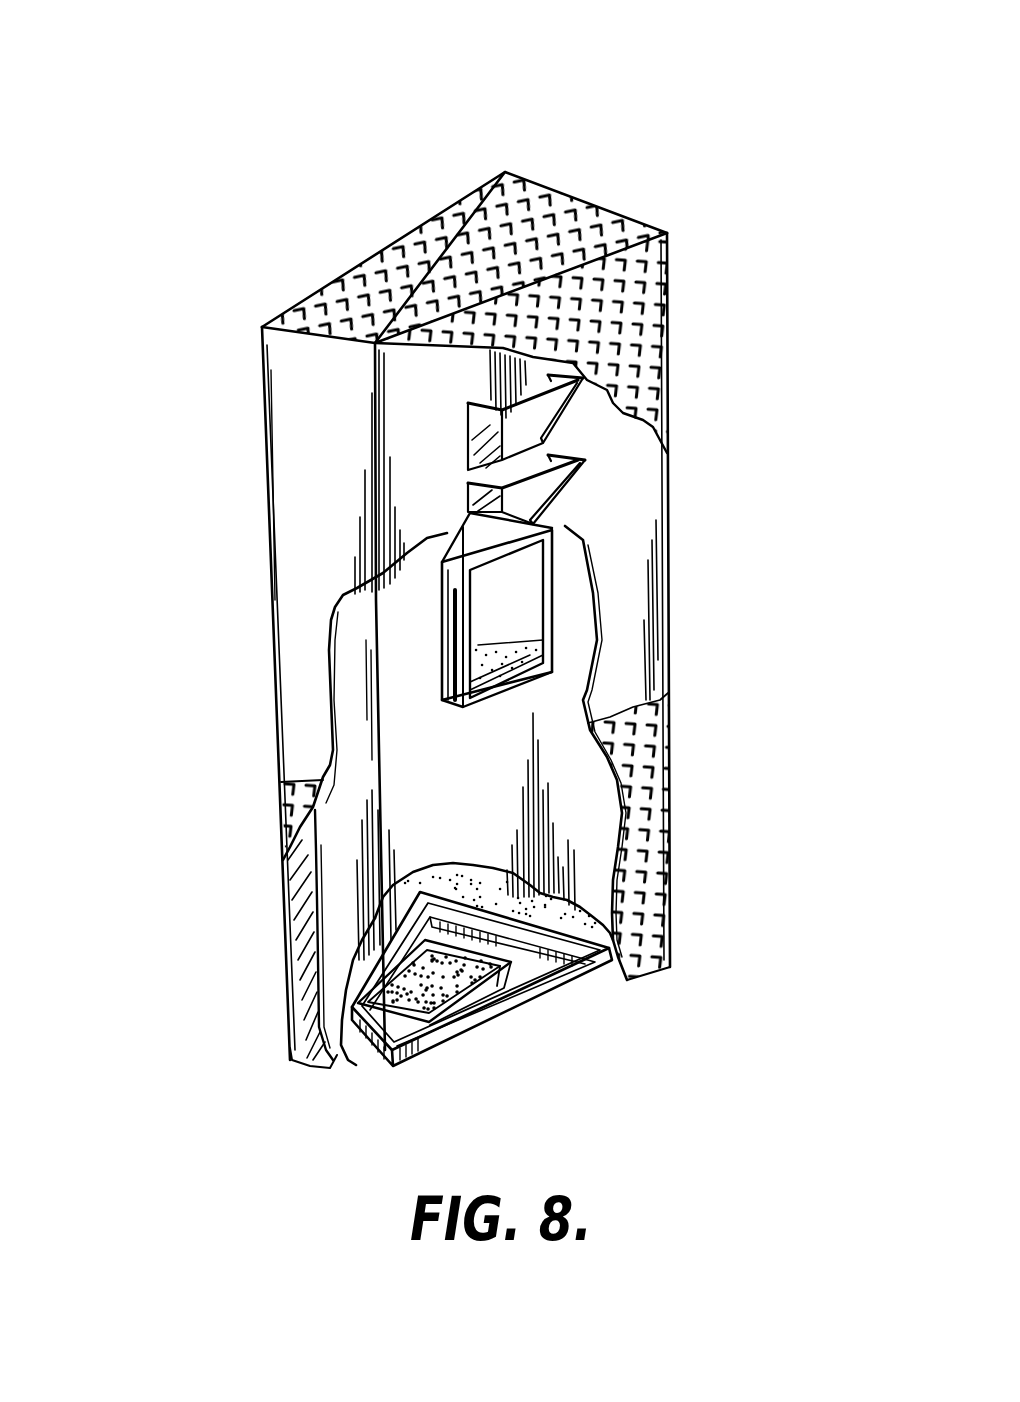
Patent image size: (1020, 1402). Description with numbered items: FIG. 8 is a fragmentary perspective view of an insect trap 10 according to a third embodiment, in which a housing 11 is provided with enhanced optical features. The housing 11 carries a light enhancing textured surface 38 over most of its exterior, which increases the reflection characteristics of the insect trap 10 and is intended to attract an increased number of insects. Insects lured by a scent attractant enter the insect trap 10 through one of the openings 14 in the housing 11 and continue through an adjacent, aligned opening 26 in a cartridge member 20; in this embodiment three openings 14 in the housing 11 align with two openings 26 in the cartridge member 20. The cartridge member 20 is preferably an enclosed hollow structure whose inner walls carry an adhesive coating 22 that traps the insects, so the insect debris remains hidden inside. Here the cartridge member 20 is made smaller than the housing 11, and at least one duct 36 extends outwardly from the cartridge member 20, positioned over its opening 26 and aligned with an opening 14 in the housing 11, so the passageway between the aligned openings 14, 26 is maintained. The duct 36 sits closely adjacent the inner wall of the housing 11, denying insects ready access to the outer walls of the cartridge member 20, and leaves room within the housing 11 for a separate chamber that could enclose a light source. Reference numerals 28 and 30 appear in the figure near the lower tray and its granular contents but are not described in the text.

The insect trap 10 is at (355, 150).
The housing 11 is at (661, 655).
The opening 14 is at (543, 494).
The cartridge member 20 is at (567, 768).
The adhesive coating 22 is at (540, 903).
The opening 26 is at (510, 598).
The tray 28 is at (543, 992).
The granular bait 30 is at (430, 1003).
The duct 36 is at (453, 648).
The light enhancing textured surface 38 is at (642, 307).